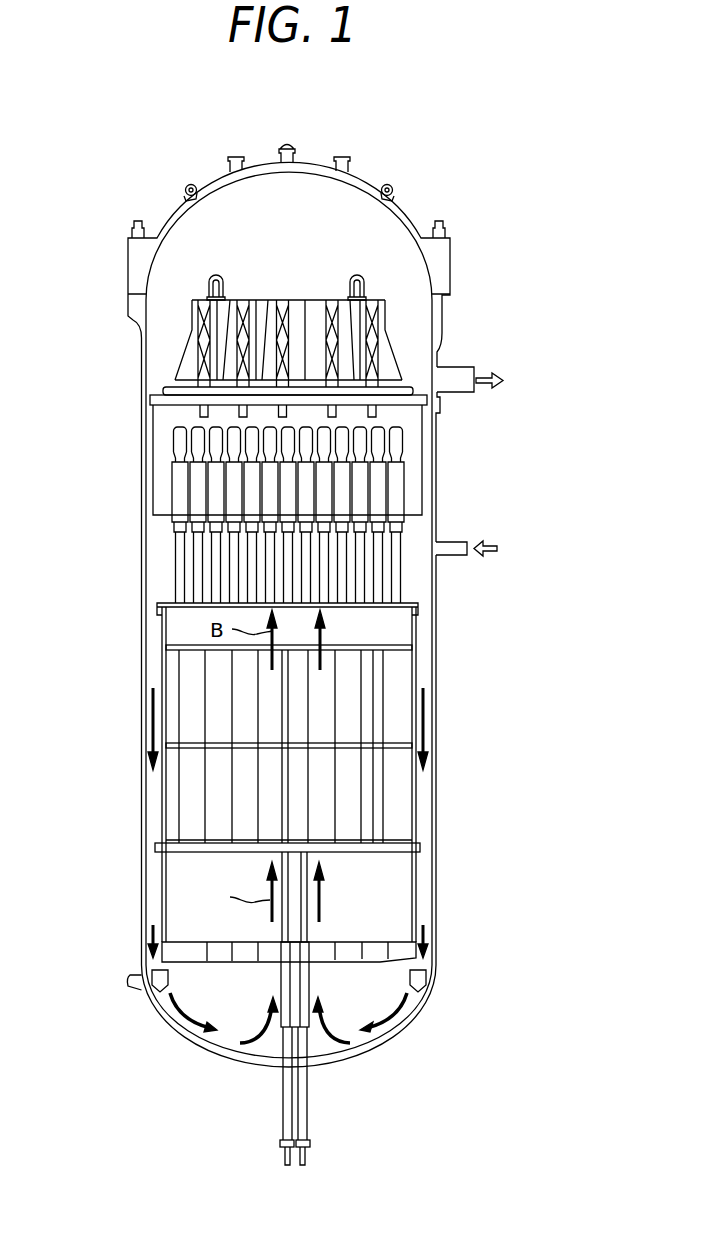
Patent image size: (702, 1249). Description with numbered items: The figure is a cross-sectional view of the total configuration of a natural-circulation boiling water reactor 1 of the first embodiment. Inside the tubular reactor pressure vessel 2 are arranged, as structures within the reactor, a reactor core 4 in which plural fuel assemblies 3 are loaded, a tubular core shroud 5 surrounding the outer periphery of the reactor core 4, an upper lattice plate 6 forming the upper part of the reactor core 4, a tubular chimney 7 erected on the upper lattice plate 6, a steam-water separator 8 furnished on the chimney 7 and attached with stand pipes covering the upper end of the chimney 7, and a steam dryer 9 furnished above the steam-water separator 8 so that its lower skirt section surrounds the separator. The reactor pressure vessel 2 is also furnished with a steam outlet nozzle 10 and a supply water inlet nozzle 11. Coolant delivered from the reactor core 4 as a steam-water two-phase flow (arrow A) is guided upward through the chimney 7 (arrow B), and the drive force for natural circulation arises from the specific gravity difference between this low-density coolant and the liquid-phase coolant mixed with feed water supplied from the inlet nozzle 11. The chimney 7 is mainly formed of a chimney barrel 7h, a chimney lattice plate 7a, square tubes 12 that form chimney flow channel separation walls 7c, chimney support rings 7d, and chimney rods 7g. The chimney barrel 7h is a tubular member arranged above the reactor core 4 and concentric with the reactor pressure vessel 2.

The natural-circulation boiling water reactor 1 is at (412, 165).
The reactor pressure vessel 2 is at (137, 662).
The fuel assemblies 3 is at (285, 925).
The reactor core 4 is at (430, 930).
The core shroud 5 is at (416, 916).
The upper lattice plate 6 is at (398, 850).
The chimney 7 is at (350, 735).
The chimney lattice plate 7a is at (413, 833).
The chimney flow channel separation walls 7c is at (383, 785).
The chimney support rings 7d is at (395, 743).
The chimney rods 7g is at (373, 808).
The chimney barrel 7h is at (421, 616).
The steam-water separator 8 is at (397, 487).
The steam dryer 9 is at (383, 321).
The steam outlet nozzle 10 is at (440, 358).
The supply water inlet nozzle 11 is at (440, 534).
The square tubes 12 is at (347, 826).